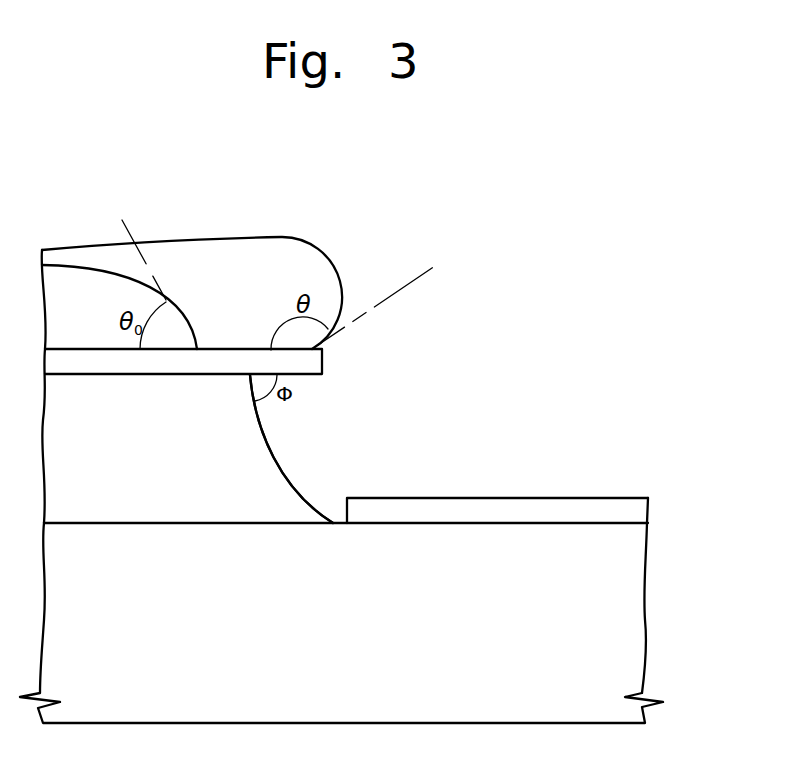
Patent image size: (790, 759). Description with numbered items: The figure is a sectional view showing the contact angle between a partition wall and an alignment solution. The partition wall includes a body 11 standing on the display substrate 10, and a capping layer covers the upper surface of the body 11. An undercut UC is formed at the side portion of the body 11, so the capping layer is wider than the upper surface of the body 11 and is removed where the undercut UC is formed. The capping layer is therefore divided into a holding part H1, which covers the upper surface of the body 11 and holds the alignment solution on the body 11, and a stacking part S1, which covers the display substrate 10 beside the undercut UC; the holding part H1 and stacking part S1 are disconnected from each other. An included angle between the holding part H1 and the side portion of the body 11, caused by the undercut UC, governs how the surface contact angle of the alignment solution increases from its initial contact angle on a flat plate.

The holding part H1 is at (308, 363).
The body 11 is at (277, 483).
The undercut UC is at (287, 430).
The stacking part S1 is at (628, 513).
The display substrate 10 is at (635, 612).